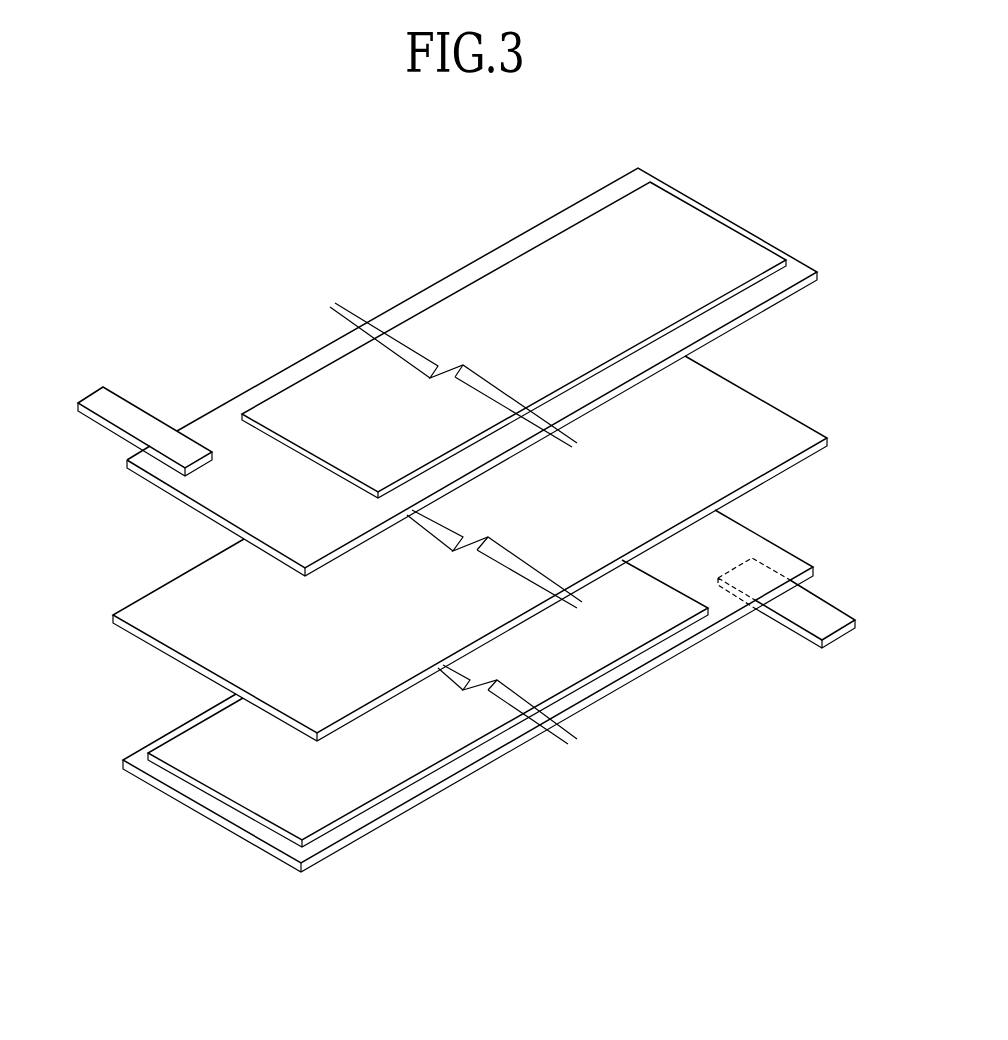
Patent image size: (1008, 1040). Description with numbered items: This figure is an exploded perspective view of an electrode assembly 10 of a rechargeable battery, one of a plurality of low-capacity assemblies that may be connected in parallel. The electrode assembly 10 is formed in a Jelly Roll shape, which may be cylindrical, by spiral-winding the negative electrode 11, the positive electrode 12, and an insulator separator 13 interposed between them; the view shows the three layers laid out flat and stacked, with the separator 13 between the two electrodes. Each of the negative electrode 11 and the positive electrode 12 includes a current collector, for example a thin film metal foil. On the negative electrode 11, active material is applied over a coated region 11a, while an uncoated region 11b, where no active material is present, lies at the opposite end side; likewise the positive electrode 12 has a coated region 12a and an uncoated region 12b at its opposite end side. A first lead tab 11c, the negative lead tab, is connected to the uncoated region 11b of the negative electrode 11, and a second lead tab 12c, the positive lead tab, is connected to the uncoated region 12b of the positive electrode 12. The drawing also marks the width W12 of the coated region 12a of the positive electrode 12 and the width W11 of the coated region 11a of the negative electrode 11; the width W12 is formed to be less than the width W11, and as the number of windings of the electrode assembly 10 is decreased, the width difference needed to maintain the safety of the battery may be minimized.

The electrode assembly 10 is at (333, 252).
The negative electrode 11 is at (763, 532).
The coated region 11a is at (387, 768).
The uncoated region 11b is at (720, 603).
The first lead tab 11c is at (808, 610).
The positive electrode 12 is at (708, 202).
The coated region 12a is at (333, 370).
The uncoated region 12b is at (212, 490).
The second lead tab 12c is at (118, 407).
The separator 13 is at (747, 388).
The width of the coated region of the negative electrode W11 is at (330, 822).
The width of the coated region of the positive electrode W12 is at (407, 472).